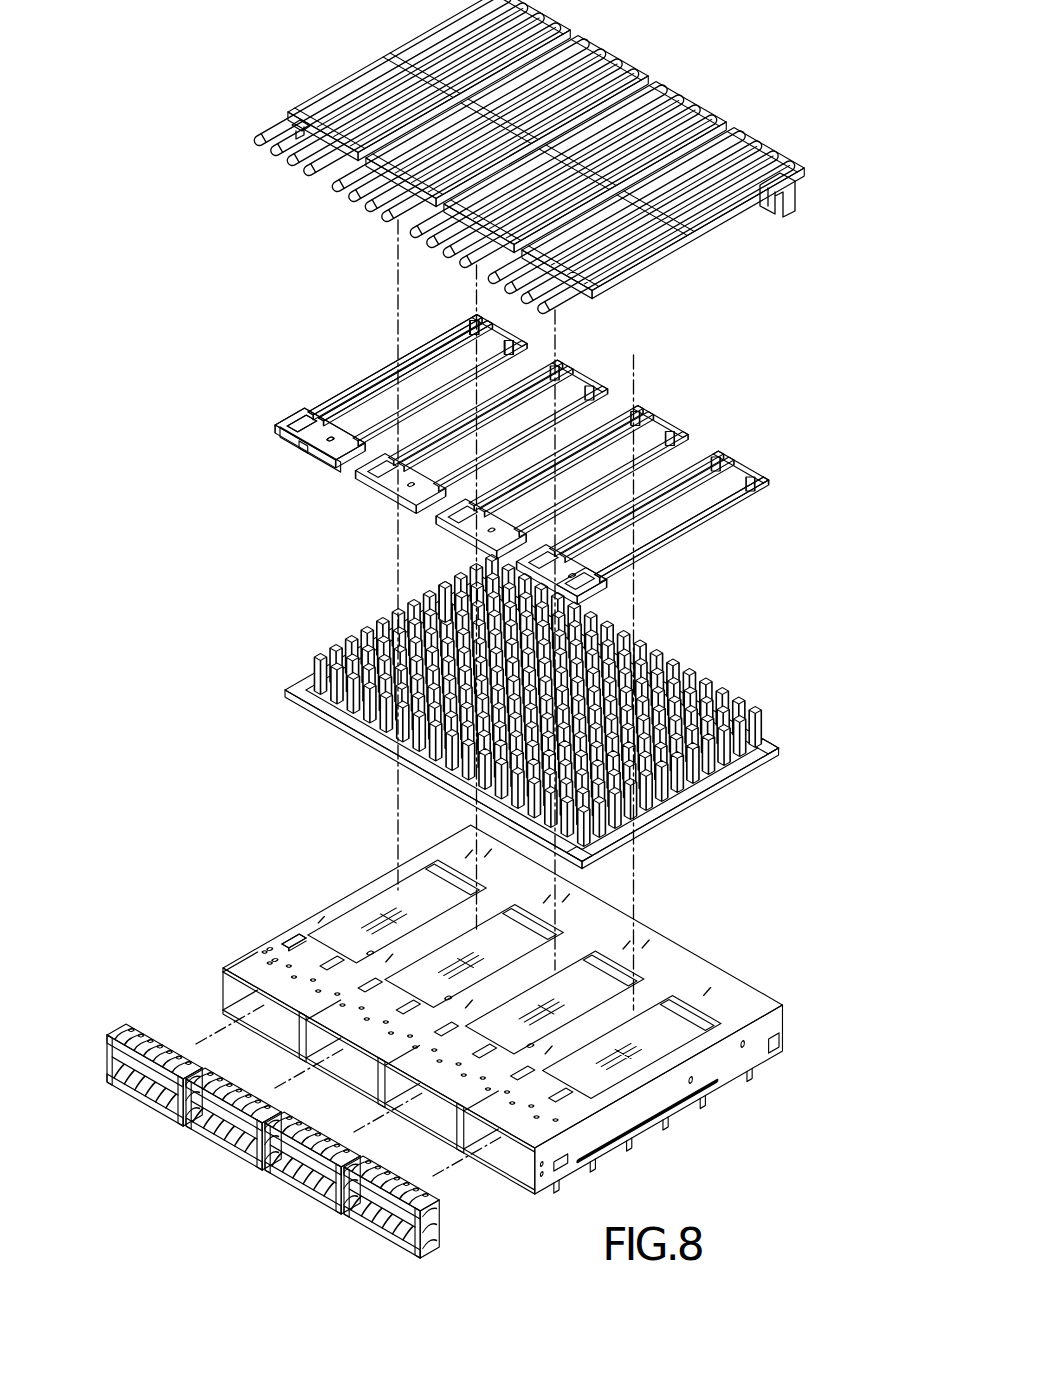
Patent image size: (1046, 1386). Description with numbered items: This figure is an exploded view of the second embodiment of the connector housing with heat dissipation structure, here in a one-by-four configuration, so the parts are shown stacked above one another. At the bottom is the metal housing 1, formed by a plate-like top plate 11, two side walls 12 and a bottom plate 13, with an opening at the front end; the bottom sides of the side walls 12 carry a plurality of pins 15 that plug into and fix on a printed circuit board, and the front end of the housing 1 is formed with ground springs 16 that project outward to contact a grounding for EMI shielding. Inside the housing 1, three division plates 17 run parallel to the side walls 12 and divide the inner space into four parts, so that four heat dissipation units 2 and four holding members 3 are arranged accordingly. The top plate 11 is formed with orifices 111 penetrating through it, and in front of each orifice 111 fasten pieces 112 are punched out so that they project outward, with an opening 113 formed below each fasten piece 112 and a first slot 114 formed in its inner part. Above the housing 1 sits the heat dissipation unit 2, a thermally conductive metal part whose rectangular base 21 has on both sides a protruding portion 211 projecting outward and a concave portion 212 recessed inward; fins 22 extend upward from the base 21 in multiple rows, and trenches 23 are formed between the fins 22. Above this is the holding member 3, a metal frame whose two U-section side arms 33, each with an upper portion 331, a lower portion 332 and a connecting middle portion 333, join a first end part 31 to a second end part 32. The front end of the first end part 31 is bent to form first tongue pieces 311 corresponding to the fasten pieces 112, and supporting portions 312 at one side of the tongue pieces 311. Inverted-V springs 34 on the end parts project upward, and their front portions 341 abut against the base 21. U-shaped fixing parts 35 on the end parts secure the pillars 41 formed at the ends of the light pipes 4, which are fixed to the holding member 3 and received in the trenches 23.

The housing 1 is at (318, 896).
The top plate 11 is at (662, 946).
The orifice 111 is at (374, 897).
The fasten piece 112 is at (300, 930).
The opening 113 is at (270, 958).
The first slot 114 is at (237, 957).
The side wall 12 is at (720, 1062).
The bottom plate 13 is at (522, 1184).
The pin 15 is at (664, 1128).
The ground spring 16 is at (135, 1024).
The division plate 17 is at (300, 1036).
The heat dissipation unit 2 is at (324, 634).
The base 21 is at (320, 702).
The protruding portion 211 is at (780, 758).
The concave portion 212 is at (620, 858).
The fin 22 is at (380, 628).
The trench 23 is at (405, 598).
The holding member 3 is at (270, 411).
The first end part 31 is at (280, 422).
The first tongue piece 311 is at (600, 610).
The supporting portion 312 is at (606, 600).
The second end part 32 is at (530, 320).
The side arm 33 is at (455, 338).
The upper portion 331 is at (412, 338).
The lower portion 332 is at (403, 356).
The middle portion 333 is at (690, 524).
The spring 34 is at (316, 403).
The front portion 341 is at (330, 400).
The fixing part 35 is at (306, 442).
The light pipe 4 is at (336, 72).
The pillar 41 is at (298, 124).